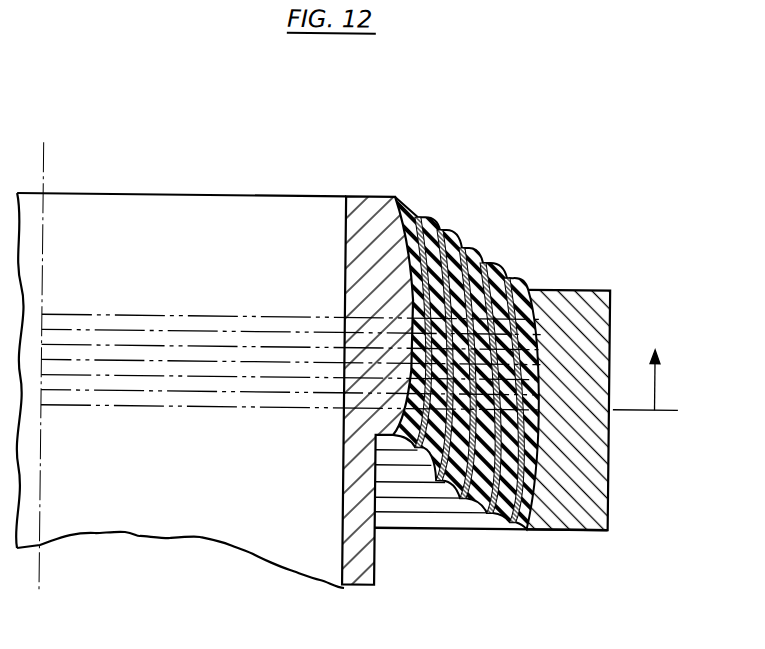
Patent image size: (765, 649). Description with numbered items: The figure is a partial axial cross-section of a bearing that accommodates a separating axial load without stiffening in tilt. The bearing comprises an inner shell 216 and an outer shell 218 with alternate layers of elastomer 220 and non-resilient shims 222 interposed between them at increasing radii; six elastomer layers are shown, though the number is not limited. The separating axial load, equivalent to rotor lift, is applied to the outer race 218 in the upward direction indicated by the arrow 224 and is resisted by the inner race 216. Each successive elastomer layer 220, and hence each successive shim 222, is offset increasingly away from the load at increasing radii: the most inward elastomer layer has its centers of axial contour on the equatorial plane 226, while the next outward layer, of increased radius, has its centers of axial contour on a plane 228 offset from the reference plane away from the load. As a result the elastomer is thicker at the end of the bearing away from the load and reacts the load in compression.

The inner shell 216 is at (378, 578).
The outer shell 218 is at (587, 289).
The elastomer layer 220 is at (428, 463).
The non-resilient shim 222 is at (460, 247).
The arrow 224 is at (655, 372).
The equatorial plane 226 is at (83, 316).
The plane 228 is at (181, 330).